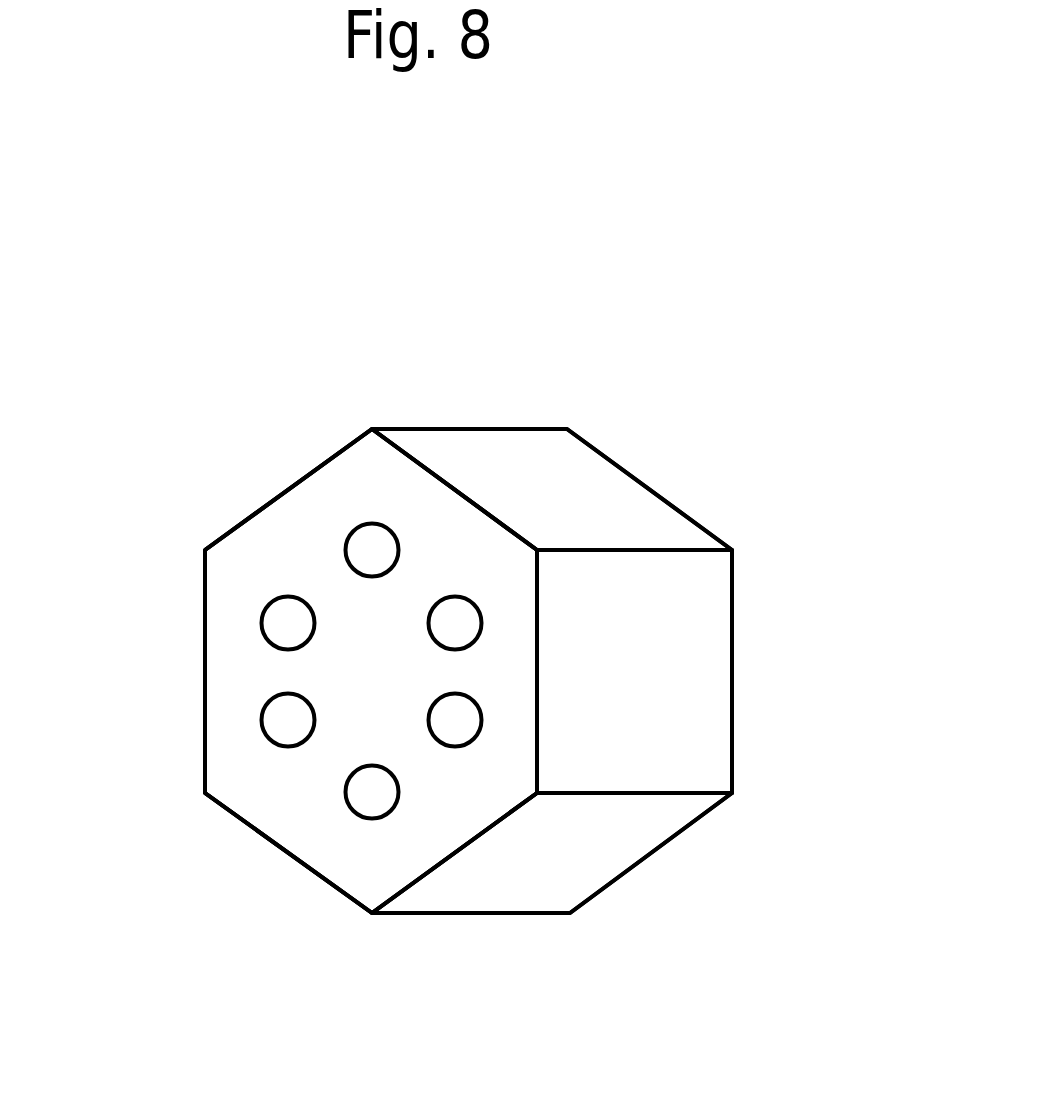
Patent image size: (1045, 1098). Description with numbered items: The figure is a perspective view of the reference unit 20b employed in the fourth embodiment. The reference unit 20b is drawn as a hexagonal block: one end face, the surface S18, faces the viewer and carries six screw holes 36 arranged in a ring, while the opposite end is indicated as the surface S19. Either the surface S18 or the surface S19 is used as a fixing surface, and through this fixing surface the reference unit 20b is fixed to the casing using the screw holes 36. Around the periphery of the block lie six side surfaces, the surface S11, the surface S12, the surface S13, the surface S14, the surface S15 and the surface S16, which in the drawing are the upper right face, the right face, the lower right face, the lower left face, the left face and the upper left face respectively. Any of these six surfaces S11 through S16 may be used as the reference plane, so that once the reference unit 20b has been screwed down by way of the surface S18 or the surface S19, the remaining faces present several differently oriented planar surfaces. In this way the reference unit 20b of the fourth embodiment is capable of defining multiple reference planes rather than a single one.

The reference unit 20b is at (532, 377).
The screw holes 36 is at (460, 725).
The surface S11 is at (593, 507).
The surface S12 is at (692, 695).
The surface S13 is at (598, 847).
The surface S14 is at (310, 873).
The surface S15 is at (205, 700).
The surface S16 is at (328, 455).
The surface S18 is at (285, 550).
The surface S19 is at (745, 597).